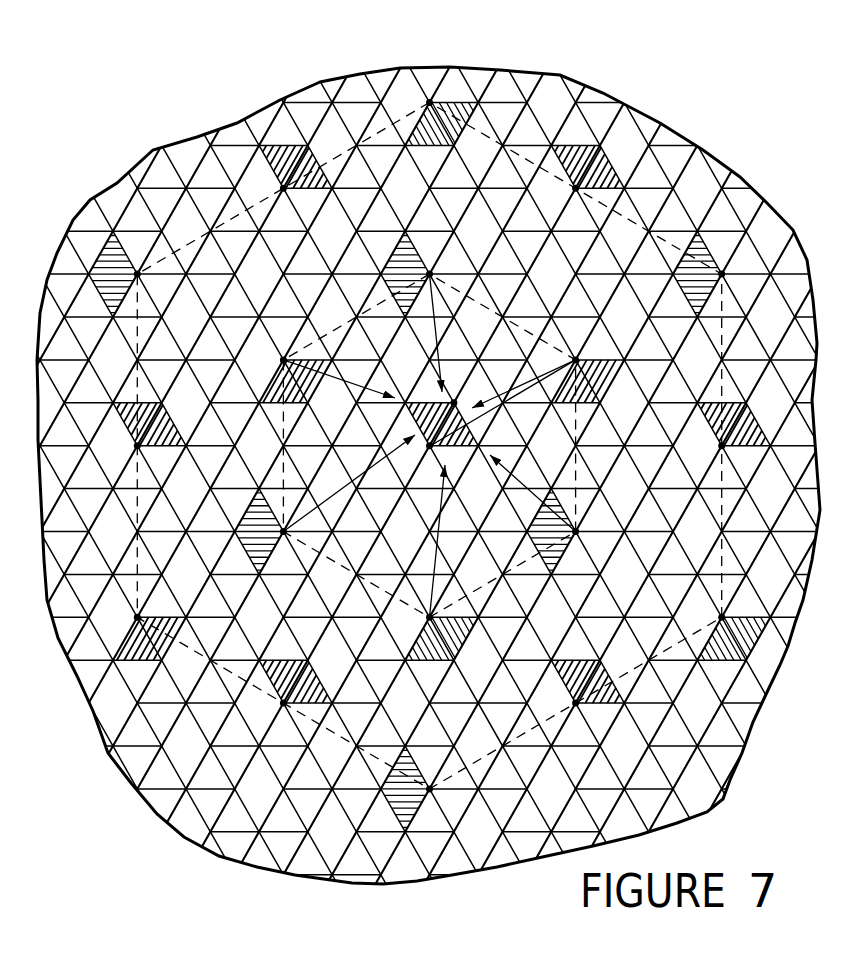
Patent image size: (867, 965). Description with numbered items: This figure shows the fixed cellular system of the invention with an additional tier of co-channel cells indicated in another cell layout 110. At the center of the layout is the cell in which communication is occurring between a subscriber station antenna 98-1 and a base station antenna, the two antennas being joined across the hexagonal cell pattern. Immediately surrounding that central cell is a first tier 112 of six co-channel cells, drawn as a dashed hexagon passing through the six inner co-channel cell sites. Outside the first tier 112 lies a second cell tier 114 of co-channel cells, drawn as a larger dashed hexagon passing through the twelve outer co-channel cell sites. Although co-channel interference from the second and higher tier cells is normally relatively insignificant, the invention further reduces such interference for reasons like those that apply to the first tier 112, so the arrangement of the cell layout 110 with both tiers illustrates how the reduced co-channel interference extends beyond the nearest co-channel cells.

The subscriber station antenna 98-1 is at (457, 403).
The cell layout 110 is at (661, 122).
The first tier 112 is at (503, 295).
The second cell tier 114 is at (386, 128).